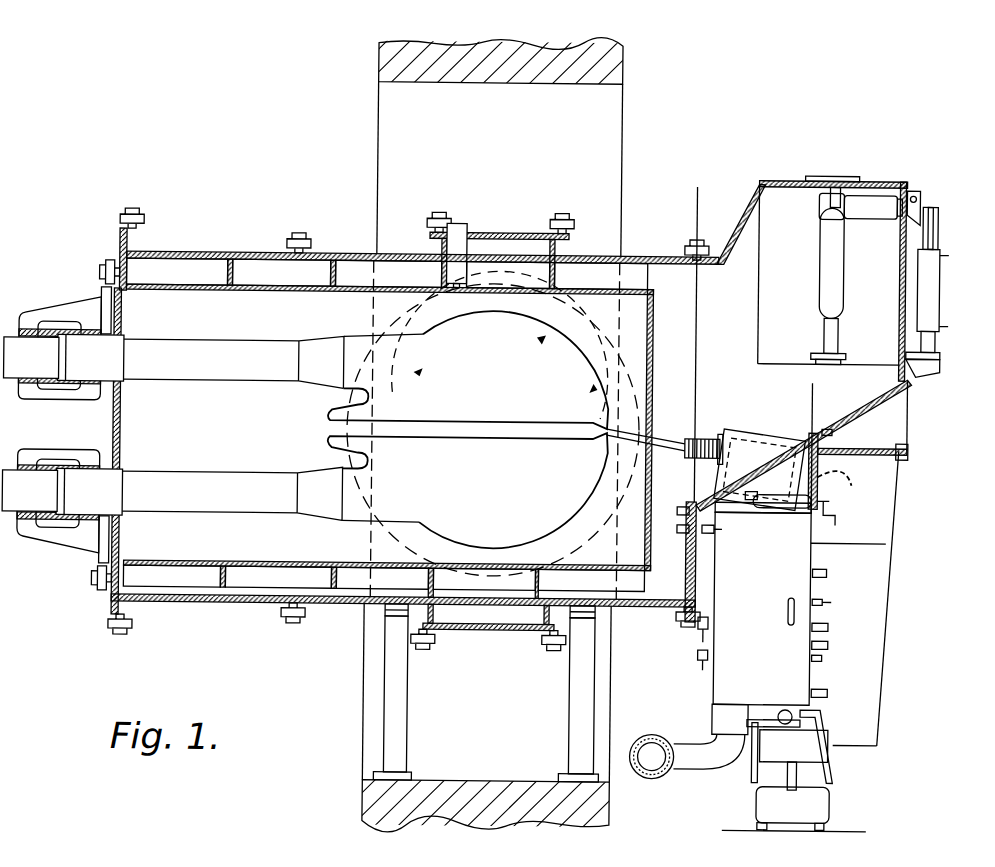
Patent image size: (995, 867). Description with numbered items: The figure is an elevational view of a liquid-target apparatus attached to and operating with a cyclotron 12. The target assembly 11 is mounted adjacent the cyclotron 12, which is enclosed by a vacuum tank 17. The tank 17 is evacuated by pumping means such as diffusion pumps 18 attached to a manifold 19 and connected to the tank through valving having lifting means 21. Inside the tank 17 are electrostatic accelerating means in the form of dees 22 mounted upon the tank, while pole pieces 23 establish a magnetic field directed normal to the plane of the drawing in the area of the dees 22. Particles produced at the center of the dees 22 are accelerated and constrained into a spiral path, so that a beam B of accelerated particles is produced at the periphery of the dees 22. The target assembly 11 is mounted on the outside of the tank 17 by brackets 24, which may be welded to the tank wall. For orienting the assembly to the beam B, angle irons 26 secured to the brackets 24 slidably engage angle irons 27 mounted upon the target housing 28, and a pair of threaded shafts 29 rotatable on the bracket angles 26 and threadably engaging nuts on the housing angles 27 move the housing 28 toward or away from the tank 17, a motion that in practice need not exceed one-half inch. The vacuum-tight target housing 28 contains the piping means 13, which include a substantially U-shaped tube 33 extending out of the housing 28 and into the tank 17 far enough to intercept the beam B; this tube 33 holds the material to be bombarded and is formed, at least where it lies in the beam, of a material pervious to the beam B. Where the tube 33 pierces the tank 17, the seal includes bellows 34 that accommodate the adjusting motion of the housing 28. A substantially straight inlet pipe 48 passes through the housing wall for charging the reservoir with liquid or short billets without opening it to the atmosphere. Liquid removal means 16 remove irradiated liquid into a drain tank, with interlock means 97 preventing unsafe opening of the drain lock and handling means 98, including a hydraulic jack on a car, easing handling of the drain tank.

The target assembly 11 is at (826, 585).
The cyclotron 12 is at (337, 226).
The piping means 13 is at (688, 430).
The liquid removal means 16 is at (833, 714).
The vacuum tank 17 is at (221, 601).
The diffusion pumps 18 is at (882, 629).
The manifold 19 is at (660, 735).
The lifting means 21 is at (946, 289).
The dees 22 is at (478, 386).
The pole pieces 23 is at (388, 332).
The brackets 24 is at (862, 466).
The angle irons 26 is at (788, 506).
The angle irons 27 is at (737, 513).
The target housing 28 is at (770, 595).
The threaded shafts 29 is at (752, 498).
The U-shaped tube 33 is at (652, 434).
The bellows 34 is at (707, 458).
The inlet pipe 48 is at (792, 618).
The interlock means 97 is at (841, 759).
The handling means 98 is at (841, 805).
The beam B is at (587, 369).